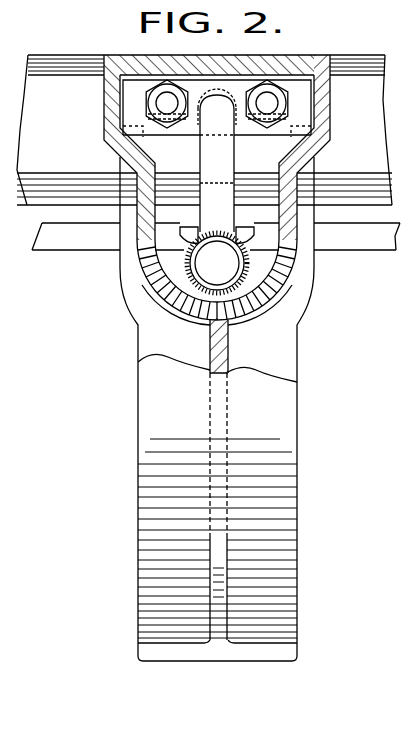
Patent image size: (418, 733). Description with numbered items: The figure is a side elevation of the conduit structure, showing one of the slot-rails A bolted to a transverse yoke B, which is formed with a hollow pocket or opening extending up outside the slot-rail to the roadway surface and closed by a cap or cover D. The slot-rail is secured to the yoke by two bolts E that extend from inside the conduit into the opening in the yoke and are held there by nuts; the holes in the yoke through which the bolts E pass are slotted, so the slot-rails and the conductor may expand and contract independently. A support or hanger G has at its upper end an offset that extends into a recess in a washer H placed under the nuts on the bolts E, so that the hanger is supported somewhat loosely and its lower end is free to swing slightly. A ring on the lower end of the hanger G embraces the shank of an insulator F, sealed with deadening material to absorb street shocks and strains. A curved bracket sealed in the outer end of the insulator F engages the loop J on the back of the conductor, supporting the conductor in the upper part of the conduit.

The slot-rail A is at (358, 72).
The yoke B is at (262, 173).
The cap D is at (324, 58).
The bolt E is at (163, 97).
The insulator F is at (192, 235).
The hanger G is at (210, 160).
The washer H is at (137, 108).
The loop J is at (250, 237).